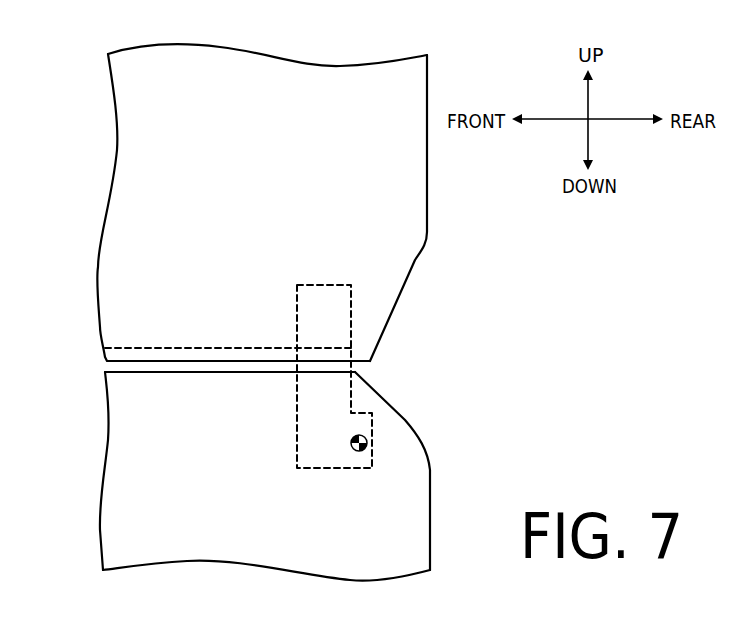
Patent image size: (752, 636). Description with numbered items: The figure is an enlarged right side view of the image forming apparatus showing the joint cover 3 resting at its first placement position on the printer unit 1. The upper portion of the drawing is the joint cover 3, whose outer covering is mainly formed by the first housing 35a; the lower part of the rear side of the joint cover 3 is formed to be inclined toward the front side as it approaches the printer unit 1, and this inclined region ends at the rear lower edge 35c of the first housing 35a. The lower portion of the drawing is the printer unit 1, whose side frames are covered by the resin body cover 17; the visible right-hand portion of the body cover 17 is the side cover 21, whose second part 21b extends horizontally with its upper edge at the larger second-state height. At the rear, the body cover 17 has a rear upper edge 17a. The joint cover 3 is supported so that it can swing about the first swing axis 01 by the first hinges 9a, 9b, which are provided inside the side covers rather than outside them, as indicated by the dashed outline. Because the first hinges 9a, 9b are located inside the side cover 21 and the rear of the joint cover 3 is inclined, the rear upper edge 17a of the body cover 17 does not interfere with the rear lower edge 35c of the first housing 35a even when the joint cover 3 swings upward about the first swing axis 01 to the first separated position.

The printer unit 1 is at (277, 475).
The joint cover 3 is at (303, 190).
The first hinge 9a is at (390, 376).
The first hinge 9b is at (335, 322).
The body cover 17 is at (277, 475).
The rear upper edge 17a is at (417, 428).
The side cover 21 is at (225, 542).
The second part 21b is at (162, 337).
The first housing 35a is at (330, 85).
The rear lower edge 35c is at (415, 260).
The first swing axis 01 is at (365, 437).